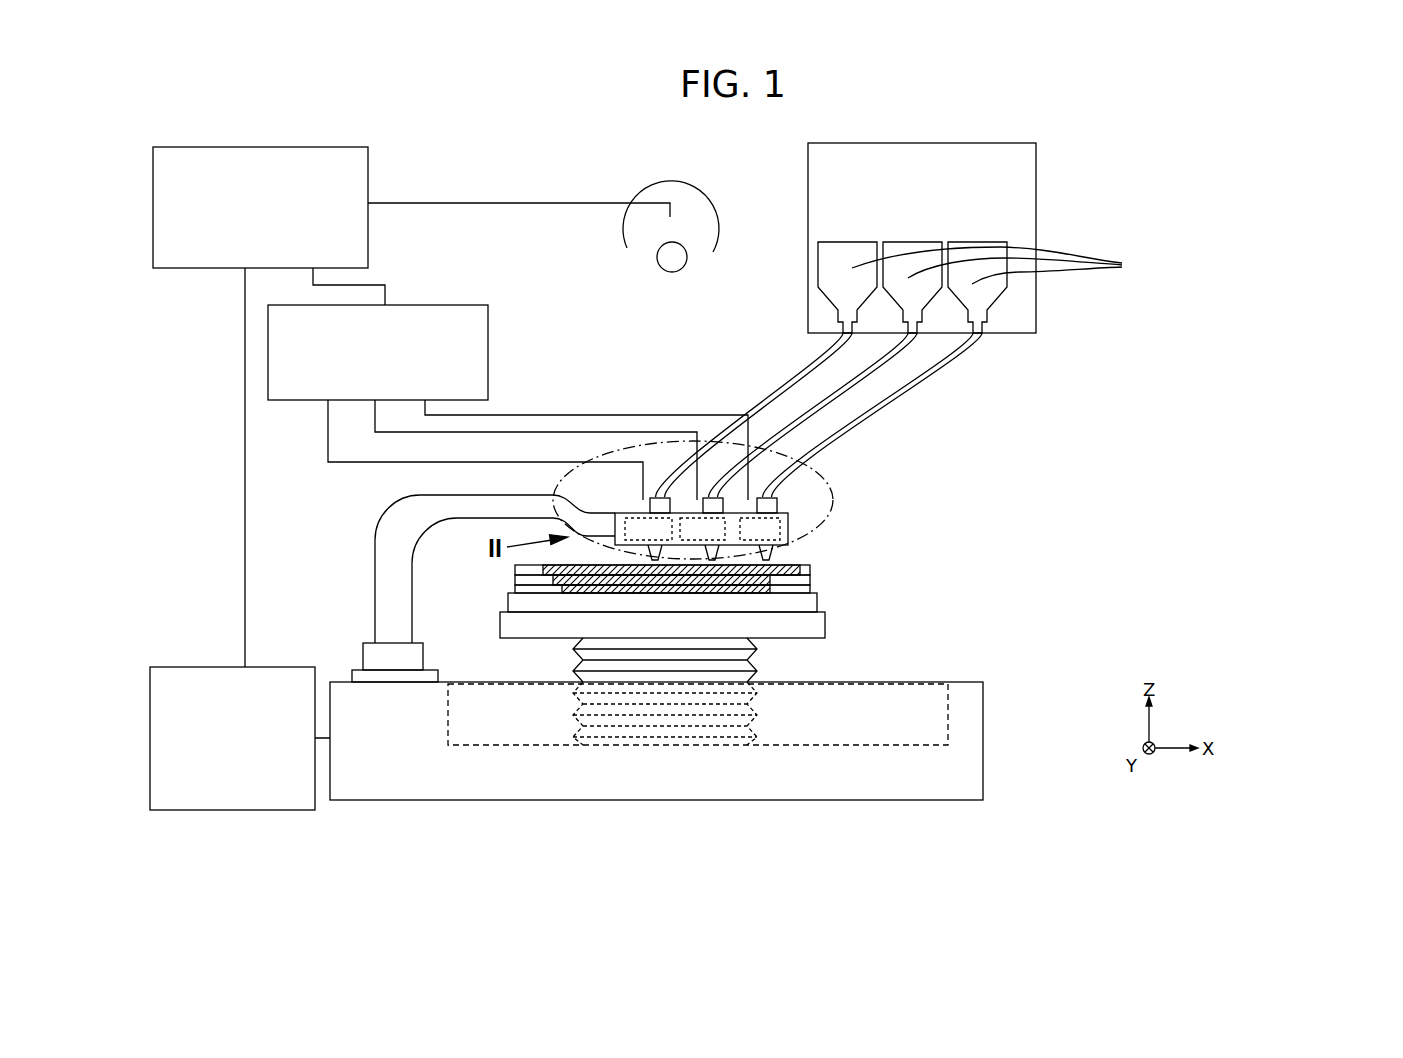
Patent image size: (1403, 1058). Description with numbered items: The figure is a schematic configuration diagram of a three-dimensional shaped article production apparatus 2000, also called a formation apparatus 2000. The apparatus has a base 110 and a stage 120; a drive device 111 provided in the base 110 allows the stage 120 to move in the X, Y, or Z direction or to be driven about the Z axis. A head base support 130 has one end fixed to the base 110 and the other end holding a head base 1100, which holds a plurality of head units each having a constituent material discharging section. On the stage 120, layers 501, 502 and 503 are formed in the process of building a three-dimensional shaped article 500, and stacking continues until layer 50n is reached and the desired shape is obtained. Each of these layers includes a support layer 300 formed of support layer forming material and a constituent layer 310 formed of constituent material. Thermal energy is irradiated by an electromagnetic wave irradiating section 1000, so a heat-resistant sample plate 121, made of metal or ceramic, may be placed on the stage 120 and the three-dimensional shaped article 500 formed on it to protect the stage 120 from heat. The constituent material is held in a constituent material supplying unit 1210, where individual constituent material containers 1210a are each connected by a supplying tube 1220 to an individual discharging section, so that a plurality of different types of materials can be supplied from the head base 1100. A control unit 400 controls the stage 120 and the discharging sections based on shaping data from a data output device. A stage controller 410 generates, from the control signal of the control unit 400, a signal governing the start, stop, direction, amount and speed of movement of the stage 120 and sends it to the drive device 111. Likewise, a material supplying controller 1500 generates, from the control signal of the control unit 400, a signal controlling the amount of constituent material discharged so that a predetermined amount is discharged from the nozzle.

The control unit 400 is at (345, 158).
The material supplying controller 1500 is at (465, 325).
The constituent material supplying unit 1210 is at (1036, 225).
The constituent material container 1210a is at (1023, 265).
The supplying tube 1220 is at (917, 394).
The electromagnetic wave irradiating section 1000 is at (700, 218).
The three-dimensional shaped article production apparatus 2000 is at (1212, 325).
The head base 1100 is at (837, 500).
The head base support 130 is at (403, 537).
The support layer 300 is at (716, 554).
The constituent layer 310 is at (562, 587).
The layer 503 is at (810, 565).
The layer 502 is at (810, 576).
The layer 501 is at (810, 585).
The layer 50n is at (969, 465).
The three-dimensional shaped article 500 is at (993, 437).
The sample plate 121 is at (818, 600).
The stage 120 is at (825, 628).
The drive device 111 is at (597, 663).
The base 110 is at (402, 750).
The stage controller 410 is at (280, 690).